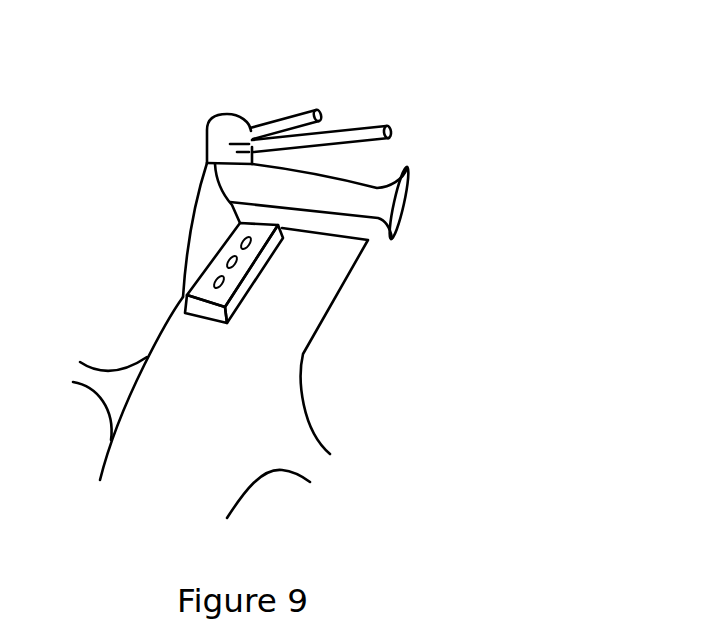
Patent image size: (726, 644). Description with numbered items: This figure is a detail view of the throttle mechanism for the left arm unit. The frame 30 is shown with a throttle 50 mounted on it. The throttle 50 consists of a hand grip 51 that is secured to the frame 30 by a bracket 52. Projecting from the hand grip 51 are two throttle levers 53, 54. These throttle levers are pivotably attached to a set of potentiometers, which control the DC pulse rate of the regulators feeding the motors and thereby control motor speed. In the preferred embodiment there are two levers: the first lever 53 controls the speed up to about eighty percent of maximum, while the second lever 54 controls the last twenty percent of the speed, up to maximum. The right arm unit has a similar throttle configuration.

The frame 30 is at (280, 375).
The throttle 50 is at (317, 178).
The hand grip 51 is at (392, 242).
The bracket 52 is at (182, 217).
The first throttle lever 53 is at (367, 120).
The second throttle lever 54 is at (275, 123).